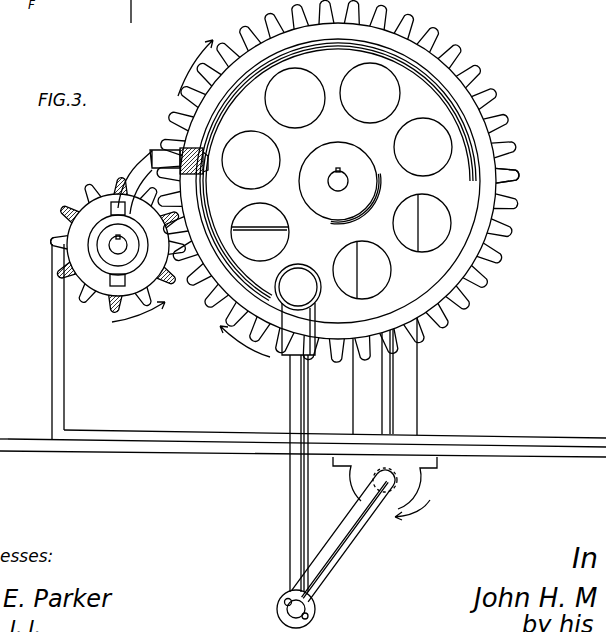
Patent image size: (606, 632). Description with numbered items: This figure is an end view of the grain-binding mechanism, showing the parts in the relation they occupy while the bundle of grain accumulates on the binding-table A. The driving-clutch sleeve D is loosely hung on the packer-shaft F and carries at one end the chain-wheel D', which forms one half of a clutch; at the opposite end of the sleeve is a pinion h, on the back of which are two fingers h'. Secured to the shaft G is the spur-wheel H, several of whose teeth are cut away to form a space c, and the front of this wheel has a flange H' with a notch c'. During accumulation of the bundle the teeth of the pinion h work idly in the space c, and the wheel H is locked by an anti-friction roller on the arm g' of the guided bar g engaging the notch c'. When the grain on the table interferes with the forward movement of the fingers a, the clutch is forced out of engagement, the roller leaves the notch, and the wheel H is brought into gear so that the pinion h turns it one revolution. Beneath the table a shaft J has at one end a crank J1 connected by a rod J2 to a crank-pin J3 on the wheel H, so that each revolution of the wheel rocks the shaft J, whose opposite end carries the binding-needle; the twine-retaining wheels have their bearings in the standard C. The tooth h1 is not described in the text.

The shaft G is at (338, 181).
The spur-wheel H is at (338, 181).
The flange H' is at (496, 178).
The space c is at (336, 172).
The notch c' is at (201, 156).
The guided bar g is at (135, 182).
The finger g' is at (165, 159).
The driving-clutch sleeve D is at (118, 245).
The chain-wheel D' is at (42, 243).
The packer-shaft F is at (116, 248).
The pinion h is at (118, 245).
The fingers h' is at (124, 245).
The ratchet tooth h1 is at (63, 212).
The standard C is at (54, 372).
The binding-table A is at (303, 438).
The fingers a is at (4, 430).
The shaft J is at (389, 480).
The crank J1 is at (343, 536).
The rod J2 is at (293, 491).
The crank-pin J3 is at (298, 309).